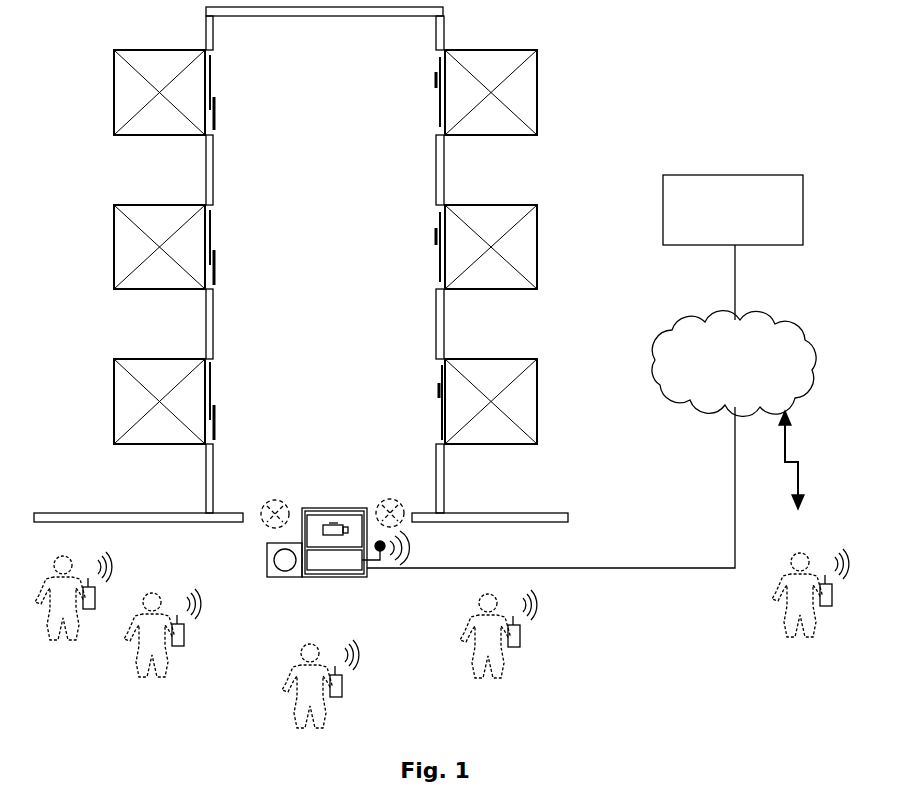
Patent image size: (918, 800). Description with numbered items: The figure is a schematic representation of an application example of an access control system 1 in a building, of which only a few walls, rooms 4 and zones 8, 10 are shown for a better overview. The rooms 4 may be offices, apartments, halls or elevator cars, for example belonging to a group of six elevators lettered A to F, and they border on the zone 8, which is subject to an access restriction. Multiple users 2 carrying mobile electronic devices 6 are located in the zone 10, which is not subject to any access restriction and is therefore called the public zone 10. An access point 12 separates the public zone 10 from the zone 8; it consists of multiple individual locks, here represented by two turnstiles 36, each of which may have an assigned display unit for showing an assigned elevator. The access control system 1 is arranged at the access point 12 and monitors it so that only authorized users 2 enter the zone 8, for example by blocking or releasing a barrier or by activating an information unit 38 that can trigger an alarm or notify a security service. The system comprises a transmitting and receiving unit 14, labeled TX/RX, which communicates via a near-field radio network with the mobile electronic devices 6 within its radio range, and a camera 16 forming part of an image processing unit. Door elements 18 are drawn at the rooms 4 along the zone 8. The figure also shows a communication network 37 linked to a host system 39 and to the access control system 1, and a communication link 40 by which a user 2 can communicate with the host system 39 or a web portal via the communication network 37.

The access control system 1 is at (354, 506).
The users 2 is at (73, 572).
The rooms 4 is at (138, 48).
The mobile electronic devices 6 is at (96, 595).
The zone 8 is at (318, 212).
The public zone 10 is at (419, 688).
The access point 12 is at (301, 486).
The transmitting and receiving unit 14 is at (345, 570).
The camera 16 is at (317, 513).
The door / door sensor 18 is at (213, 82).
The turnstiles 36 is at (275, 497).
The communication network 37 is at (715, 323).
The information unit 38 is at (278, 578).
The host system 39 is at (731, 174).
The communication link 40 is at (800, 468).